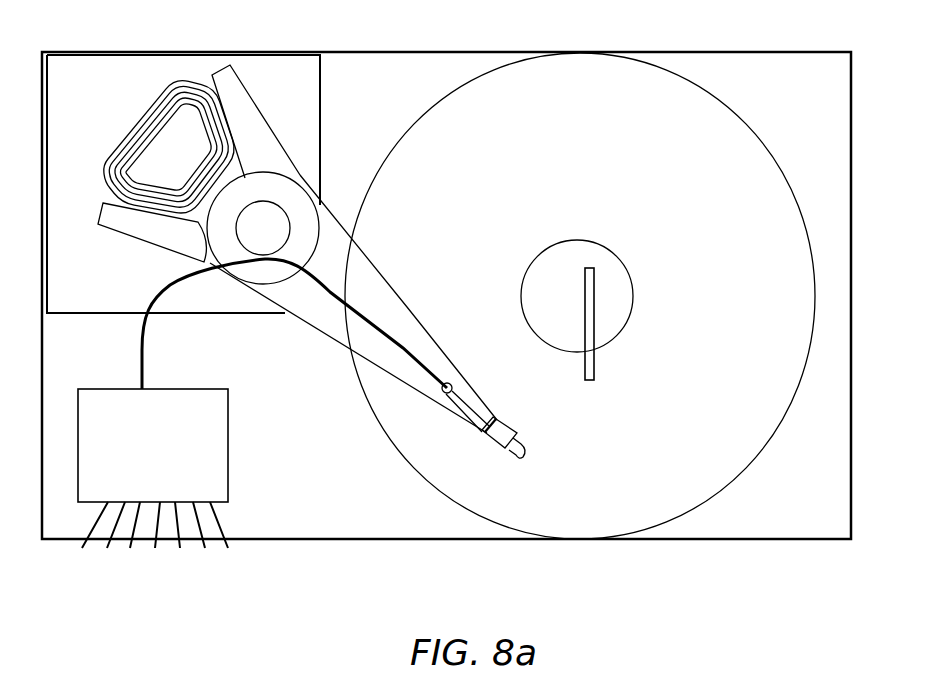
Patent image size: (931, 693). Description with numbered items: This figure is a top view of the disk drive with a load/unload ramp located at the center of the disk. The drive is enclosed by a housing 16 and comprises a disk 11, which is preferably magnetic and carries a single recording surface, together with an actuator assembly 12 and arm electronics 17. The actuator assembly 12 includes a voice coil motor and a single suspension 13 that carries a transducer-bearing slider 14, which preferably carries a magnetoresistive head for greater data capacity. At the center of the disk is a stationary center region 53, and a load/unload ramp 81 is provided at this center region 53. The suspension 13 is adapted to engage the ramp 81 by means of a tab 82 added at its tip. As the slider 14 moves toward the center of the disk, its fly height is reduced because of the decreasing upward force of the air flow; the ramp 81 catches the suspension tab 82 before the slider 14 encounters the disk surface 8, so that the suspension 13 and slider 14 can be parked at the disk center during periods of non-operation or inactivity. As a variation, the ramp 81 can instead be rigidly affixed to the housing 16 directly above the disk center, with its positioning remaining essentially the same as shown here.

The disk surface 8 is at (629, 138).
The disk 11 is at (743, 123).
The actuator assembly 12 is at (298, 167).
The suspension 13 is at (402, 305).
The transducer-bearing slider 14 is at (500, 428).
The housing 16 is at (743, 52).
The arm electronics 17 is at (230, 452).
The stationary center region 53 is at (577, 240).
The load/unload ramp 81 is at (596, 368).
The tab 82 is at (523, 462).